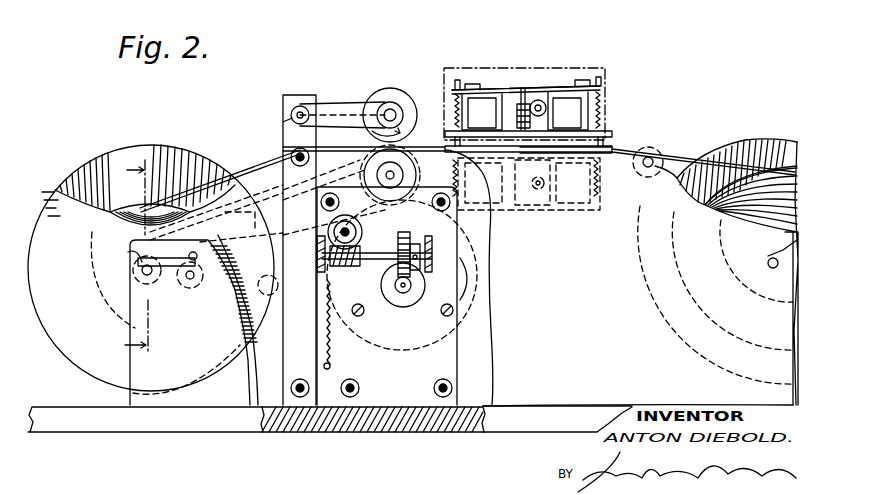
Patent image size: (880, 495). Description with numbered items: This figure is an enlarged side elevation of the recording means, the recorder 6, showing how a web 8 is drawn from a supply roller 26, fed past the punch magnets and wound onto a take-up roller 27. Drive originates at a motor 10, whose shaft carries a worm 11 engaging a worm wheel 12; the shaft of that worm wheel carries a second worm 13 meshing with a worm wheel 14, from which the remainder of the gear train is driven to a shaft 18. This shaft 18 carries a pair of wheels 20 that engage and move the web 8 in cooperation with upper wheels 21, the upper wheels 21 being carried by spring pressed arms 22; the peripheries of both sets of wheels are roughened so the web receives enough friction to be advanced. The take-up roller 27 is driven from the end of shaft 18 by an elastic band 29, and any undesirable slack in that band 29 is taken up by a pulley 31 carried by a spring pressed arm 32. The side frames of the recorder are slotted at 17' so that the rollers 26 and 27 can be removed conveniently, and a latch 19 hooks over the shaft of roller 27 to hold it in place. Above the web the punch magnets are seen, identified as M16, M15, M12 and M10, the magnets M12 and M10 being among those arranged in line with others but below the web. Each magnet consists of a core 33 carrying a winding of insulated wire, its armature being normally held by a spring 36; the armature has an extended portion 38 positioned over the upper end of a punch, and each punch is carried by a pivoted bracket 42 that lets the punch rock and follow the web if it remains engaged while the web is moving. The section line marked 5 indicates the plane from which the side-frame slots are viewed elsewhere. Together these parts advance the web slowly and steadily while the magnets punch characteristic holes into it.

The recorder 6 is at (391, 449).
The take-up roller 27 is at (108, 154).
The section line 5 is at (128, 258).
The web 8 is at (247, 166).
The elastic band 29 is at (262, 188).
The pulley 31 is at (211, 300).
The latch 19 is at (168, 280).
The slot 17' is at (447, 260).
The spring pressed arm 32 is at (282, 305).
The motor 10 is at (468, 296).
The spring pressed arms 22 is at (350, 108).
The upper wheels 21 is at (385, 92).
The shaft 18 is at (384, 174).
The worm wheel 14 is at (356, 236).
The wheels 20 is at (412, 200).
The worm 13 is at (350, 262).
The worm wheel 12 is at (396, 276).
The worm 11 is at (403, 293).
The core 33 is at (598, 96).
The spring 36 is at (599, 113).
The punch magnet M16 is at (482, 113).
The punch magnet M15 is at (567, 113).
The bracket 42 is at (514, 88).
The extended portion 38 is at (487, 86).
The punch magnet M12 is at (500, 205).
The punch magnet M10 is at (560, 205).
The supply roller 26 is at (761, 131).